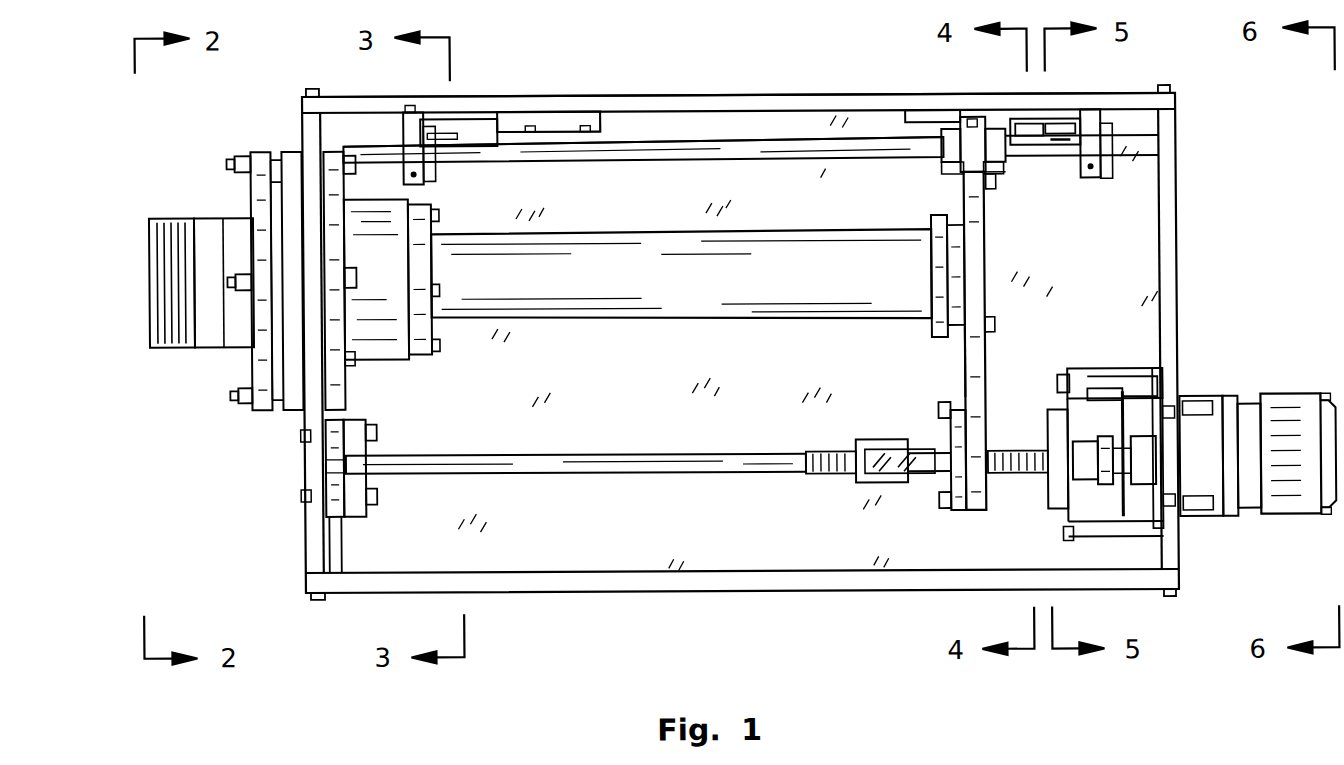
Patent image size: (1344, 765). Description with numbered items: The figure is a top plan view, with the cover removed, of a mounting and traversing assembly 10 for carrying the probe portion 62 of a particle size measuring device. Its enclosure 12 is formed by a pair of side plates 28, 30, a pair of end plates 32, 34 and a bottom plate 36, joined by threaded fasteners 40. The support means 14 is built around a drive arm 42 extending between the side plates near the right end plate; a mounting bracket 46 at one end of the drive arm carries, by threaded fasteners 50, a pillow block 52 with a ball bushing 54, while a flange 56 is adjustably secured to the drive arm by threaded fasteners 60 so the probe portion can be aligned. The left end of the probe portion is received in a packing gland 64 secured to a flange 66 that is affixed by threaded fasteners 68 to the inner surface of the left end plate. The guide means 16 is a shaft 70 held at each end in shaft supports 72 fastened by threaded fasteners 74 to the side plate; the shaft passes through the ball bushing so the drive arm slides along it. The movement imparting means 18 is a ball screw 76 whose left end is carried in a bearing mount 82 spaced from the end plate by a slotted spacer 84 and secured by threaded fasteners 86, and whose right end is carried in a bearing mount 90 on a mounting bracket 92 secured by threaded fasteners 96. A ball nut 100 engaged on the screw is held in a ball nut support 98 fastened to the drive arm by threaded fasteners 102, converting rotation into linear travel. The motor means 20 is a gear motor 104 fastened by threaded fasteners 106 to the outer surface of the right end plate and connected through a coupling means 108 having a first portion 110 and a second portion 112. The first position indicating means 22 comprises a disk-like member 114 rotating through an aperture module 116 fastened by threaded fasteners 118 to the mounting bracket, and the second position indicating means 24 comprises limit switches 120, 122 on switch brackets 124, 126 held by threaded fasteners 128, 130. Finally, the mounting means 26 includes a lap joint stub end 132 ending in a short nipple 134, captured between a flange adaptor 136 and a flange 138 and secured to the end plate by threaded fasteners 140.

The mounting and traversing assembly 10 is at (722, 593).
The enclosure 12 is at (757, 97).
The support means 14 is at (985, 265).
The guide means 16 is at (694, 160).
The movement imparting means 18 is at (664, 474).
The motor means 20 is at (1249, 442).
The first position indicating means 22 is at (1080, 372).
The second position indicating means 24 is at (1043, 146).
The mounting means 26 is at (202, 278).
The side plate 28 is at (657, 95).
The side plate 30 is at (672, 593).
The end plate 32 is at (302, 128).
The end plate 34 is at (1176, 305).
The bottom plate 36 is at (643, 414).
The threaded fasteners 40 is at (306, 93).
The drive arm 42 is at (960, 378).
The mounting bracket 46 is at (993, 193).
The threaded fasteners 50 is at (998, 178).
The pillow block 52 is at (973, 145).
The ball bushing 54 is at (945, 170).
The flange 56 is at (938, 340).
The threaded fasteners 60 is at (993, 330).
The probe portion 62 is at (613, 320).
The packing gland 64 is at (396, 303).
The flange 66 is at (350, 175).
The threaded fasteners 68 is at (350, 270).
The shaft 70 is at (565, 165).
The shaft supports 72 is at (435, 175).
The threaded fasteners 74 is at (403, 135).
The ball screw 76 is at (550, 475).
The bearing mount 82 is at (360, 517).
The slotted spacer 84 is at (335, 425).
The threaded fasteners 86 is at (375, 434).
The bearing mount 90 is at (1045, 413).
The mounting bracket 92 is at (1125, 395).
The threaded fasteners 96 is at (1055, 386).
The ball nut support 98 is at (970, 514).
The ball nut 100 is at (873, 442).
The threaded fasteners 102 is at (936, 412).
The gear motor 104 is at (1275, 518).
The threaded fasteners 106 is at (1182, 522).
The coupling means 108 is at (1102, 490).
The first portion 110 is at (1165, 385).
The second portion 112 is at (1075, 470).
The disk-like member 114 is at (1112, 520).
The aperture module 116 is at (1125, 395).
The threaded fasteners 118 is at (1108, 398).
The limit switch 120 is at (478, 120).
The limit switch 122 is at (1025, 125).
The switch bracket 124 is at (572, 115).
The switch bracket 126 is at (1062, 125).
The threaded fasteners 128 is at (598, 128).
The threaded fasteners 130 is at (918, 125).
The lap joint stub end 132 is at (242, 348).
The short nipple 134 is at (205, 348).
The flange adaptor 136 is at (291, 412).
The flange 138 is at (260, 412).
The threaded fasteners 140 is at (230, 163).